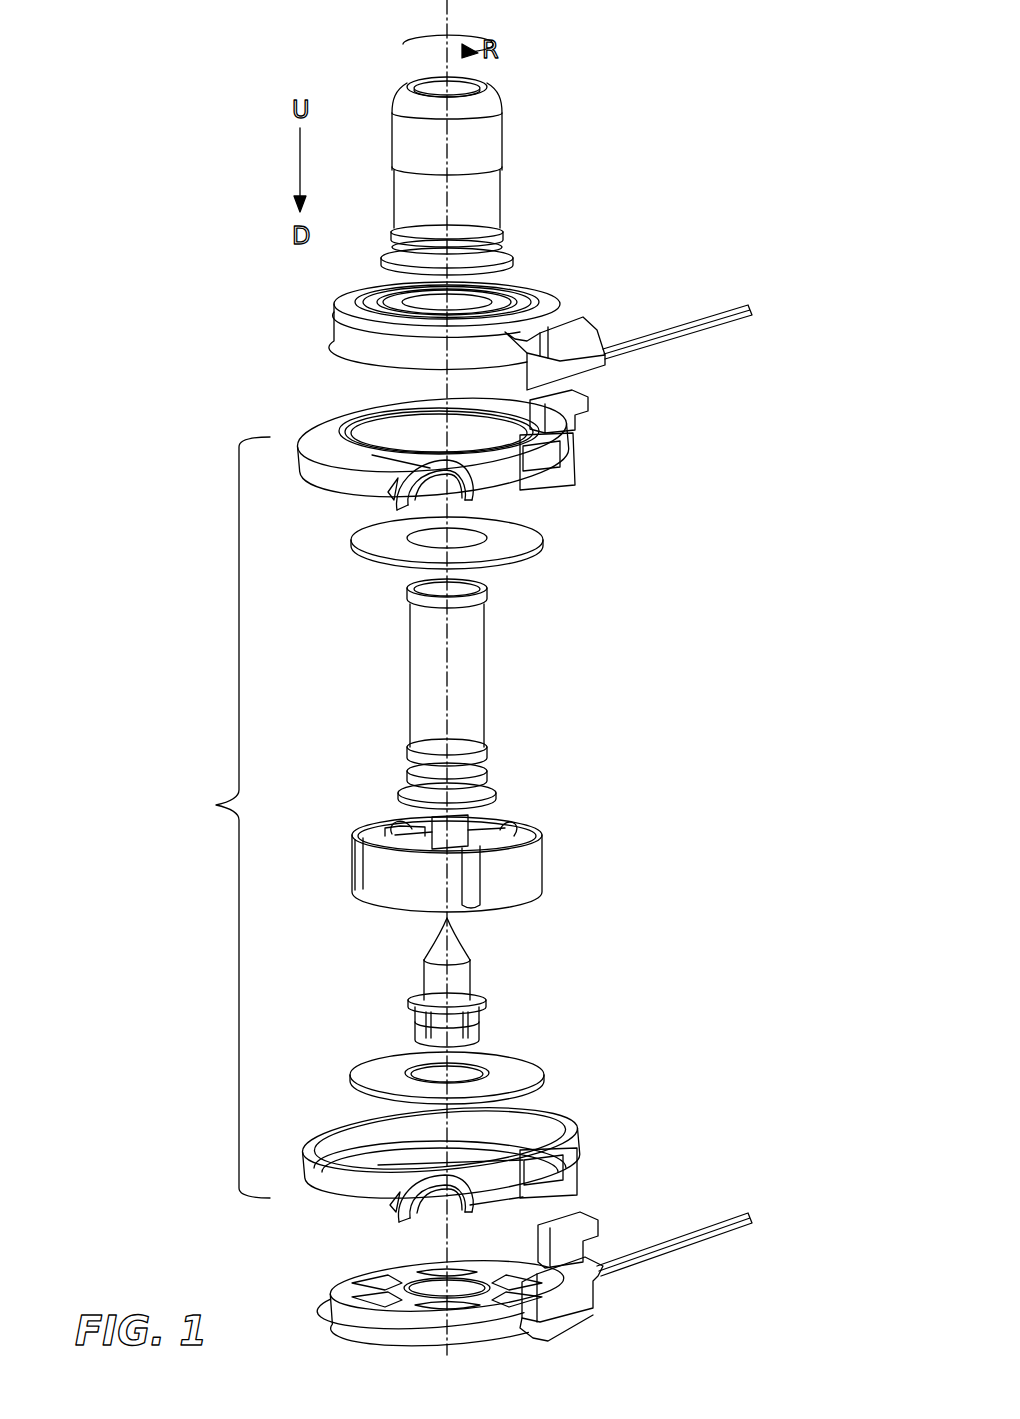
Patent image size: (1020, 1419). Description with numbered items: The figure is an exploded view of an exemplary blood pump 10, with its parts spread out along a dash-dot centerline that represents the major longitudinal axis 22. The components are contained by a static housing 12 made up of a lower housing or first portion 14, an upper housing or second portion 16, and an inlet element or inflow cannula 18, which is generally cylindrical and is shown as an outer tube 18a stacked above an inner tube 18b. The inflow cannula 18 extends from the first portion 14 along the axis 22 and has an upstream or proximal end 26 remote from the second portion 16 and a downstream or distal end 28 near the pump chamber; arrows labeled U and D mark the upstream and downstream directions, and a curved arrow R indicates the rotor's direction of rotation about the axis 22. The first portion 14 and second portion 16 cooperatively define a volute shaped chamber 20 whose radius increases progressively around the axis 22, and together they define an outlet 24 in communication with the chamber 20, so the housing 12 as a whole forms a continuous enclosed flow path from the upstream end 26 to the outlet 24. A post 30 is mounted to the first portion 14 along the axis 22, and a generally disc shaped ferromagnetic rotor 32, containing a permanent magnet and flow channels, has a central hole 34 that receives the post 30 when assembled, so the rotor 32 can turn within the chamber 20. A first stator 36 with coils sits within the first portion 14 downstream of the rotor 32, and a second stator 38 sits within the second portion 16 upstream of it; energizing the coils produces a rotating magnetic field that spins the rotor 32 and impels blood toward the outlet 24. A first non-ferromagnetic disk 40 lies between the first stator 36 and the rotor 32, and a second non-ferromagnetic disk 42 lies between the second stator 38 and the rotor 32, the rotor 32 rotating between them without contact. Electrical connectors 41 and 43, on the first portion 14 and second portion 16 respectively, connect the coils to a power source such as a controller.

The blood pump 10 is at (683, 172).
The housing 12 is at (225, 817).
The first portion 14 is at (493, 1151).
The second portion 16 is at (577, 458).
The inflow cannula 18 is at (462, 421).
The outer tube 18a is at (512, 147).
The inner tube 18b is at (487, 705).
The volute shaped chamber 20 is at (510, 1140).
The major longitudinal axis 22 is at (445, 13).
The outlet 24 is at (485, 1198).
The upstream end 26 is at (485, 86).
The downstream end 28 is at (505, 262).
The post 30 is at (472, 978).
The rotor 32 is at (492, 852).
The central hole 34 is at (460, 848).
The first stator 36 is at (590, 1316).
The second stator 38 is at (585, 318).
The first non-ferromagnetic disk 40 is at (533, 1073).
The electrical connector 41 is at (676, 1250).
The second non-ferromagnetic disk 42 is at (513, 540).
The electrical connector 43 is at (712, 310).